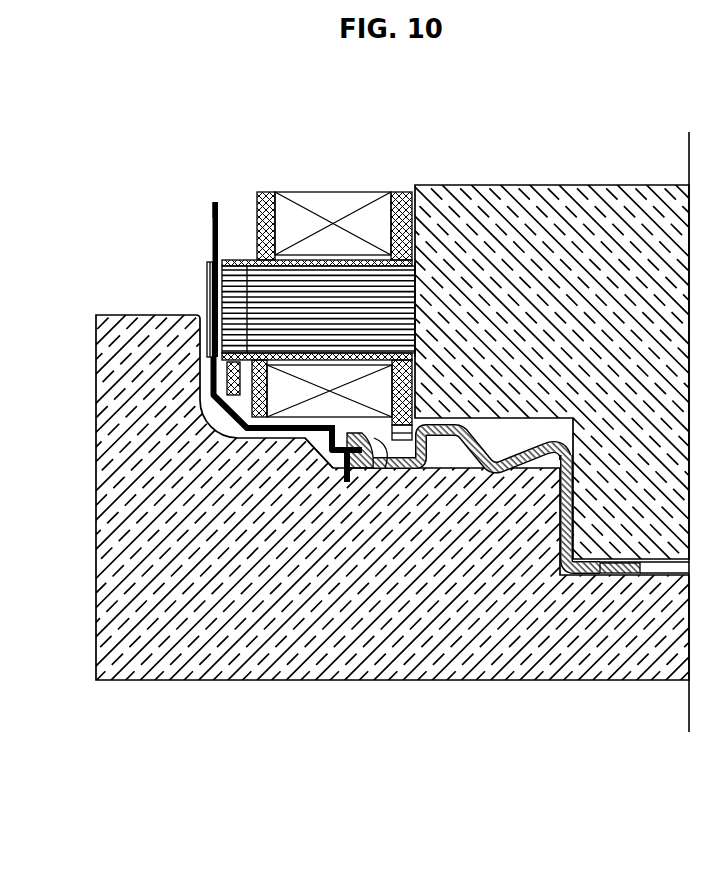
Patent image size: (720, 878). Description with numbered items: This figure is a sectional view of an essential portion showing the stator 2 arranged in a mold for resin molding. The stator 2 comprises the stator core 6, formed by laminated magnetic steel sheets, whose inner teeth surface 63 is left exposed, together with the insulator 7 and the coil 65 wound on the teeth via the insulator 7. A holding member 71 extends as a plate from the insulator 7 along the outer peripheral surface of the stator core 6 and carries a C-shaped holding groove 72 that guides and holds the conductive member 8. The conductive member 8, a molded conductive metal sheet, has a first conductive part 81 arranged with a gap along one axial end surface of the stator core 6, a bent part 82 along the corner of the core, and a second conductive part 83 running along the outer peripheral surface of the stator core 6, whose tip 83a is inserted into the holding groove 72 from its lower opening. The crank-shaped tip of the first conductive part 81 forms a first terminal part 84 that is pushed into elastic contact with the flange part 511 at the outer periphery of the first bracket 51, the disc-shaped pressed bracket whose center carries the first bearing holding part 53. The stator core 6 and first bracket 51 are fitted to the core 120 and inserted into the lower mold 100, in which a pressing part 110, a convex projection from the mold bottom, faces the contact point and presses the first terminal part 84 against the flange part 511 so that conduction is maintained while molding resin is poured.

The stator 2 is at (317, 275).
The stator core 6 is at (250, 288).
The insulator 7 is at (386, 186).
The conductive member 8 is at (201, 461).
The first bracket 51 is at (492, 478).
The first bearing holding part 53 is at (557, 522).
The teeth surface 63 is at (421, 284).
The coil 65 is at (337, 207).
The holding member 71 is at (200, 270).
The holding groove 72 is at (208, 298).
The first conductive part 81 is at (322, 470).
The bent part 82 is at (285, 424).
The second conductive part 83 is at (211, 240).
The bracket wall end 83a is at (213, 216).
The first terminal part 84 is at (338, 482).
The lower mold 100 is at (185, 680).
The pressing part 110 is at (333, 472).
The core 120 is at (581, 184).
The flange part 511 is at (388, 470).